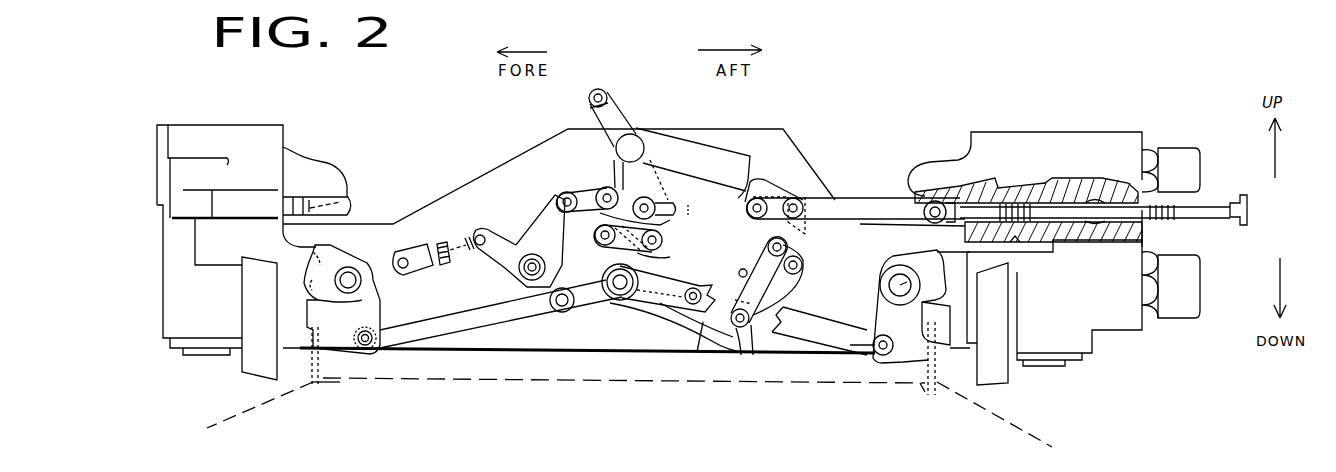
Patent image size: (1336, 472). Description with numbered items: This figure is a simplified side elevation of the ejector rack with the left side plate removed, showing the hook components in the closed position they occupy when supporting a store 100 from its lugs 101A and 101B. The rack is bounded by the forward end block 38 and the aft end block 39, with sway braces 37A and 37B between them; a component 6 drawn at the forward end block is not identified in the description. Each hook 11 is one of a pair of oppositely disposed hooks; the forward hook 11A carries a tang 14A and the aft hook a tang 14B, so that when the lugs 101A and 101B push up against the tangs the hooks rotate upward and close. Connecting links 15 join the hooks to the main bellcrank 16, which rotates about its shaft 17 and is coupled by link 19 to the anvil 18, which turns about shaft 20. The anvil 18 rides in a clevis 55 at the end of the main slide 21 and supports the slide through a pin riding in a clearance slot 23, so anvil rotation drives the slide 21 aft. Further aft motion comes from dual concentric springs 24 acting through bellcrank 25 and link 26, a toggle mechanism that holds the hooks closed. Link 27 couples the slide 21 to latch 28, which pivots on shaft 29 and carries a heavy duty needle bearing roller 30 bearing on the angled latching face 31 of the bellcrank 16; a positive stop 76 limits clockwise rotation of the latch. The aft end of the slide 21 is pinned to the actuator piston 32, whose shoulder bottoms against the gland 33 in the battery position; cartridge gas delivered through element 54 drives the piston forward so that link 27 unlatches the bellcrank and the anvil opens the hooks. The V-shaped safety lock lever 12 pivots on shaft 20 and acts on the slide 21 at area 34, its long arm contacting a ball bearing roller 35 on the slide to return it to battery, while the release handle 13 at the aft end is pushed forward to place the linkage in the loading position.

The shaft 6 is at (317, 207).
The hook 11 is at (893, 367).
The forward hook 11A is at (296, 362).
The safety lock lever 12 is at (589, 98).
The manually operated release handle 13 is at (1247, 211).
The tang 14A is at (312, 290).
The tang 14B is at (947, 290).
The connecting link 15 is at (468, 327).
The main bellcrank 16 is at (647, 335).
The shaft 17 is at (613, 302).
The anvil 18 is at (614, 175).
The link 19 is at (637, 258).
The shaft 20 is at (636, 137).
The main slide 21 is at (860, 202).
The clearance slot 23 is at (691, 201).
The dual concentric springs 24 is at (440, 243).
The bellcrank 25 is at (540, 237).
The link 26 is at (577, 187).
The link 27 is at (825, 228).
The latch 28 is at (797, 292).
The shaft 29 is at (767, 247).
The heavy duty needle bearing roller 30 is at (750, 330).
The latching face of bellcrank 31 is at (703, 322).
The actuator piston 32 is at (1043, 213).
The gland 33 is at (1163, 207).
The area 34 is at (748, 190).
The ball bearing roller 35 is at (762, 190).
The sway brace 37A is at (242, 372).
The sway brace 37B is at (998, 385).
The forward end block 38 is at (158, 150).
The aft end block 39 is at (1113, 330).
The element 54 is at (1095, 200).
The clevis 55 is at (685, 213).
The positive stop 76 is at (739, 272).
The store 100 is at (233, 430).
The lug 101A is at (328, 372).
The lug 101B is at (930, 370).